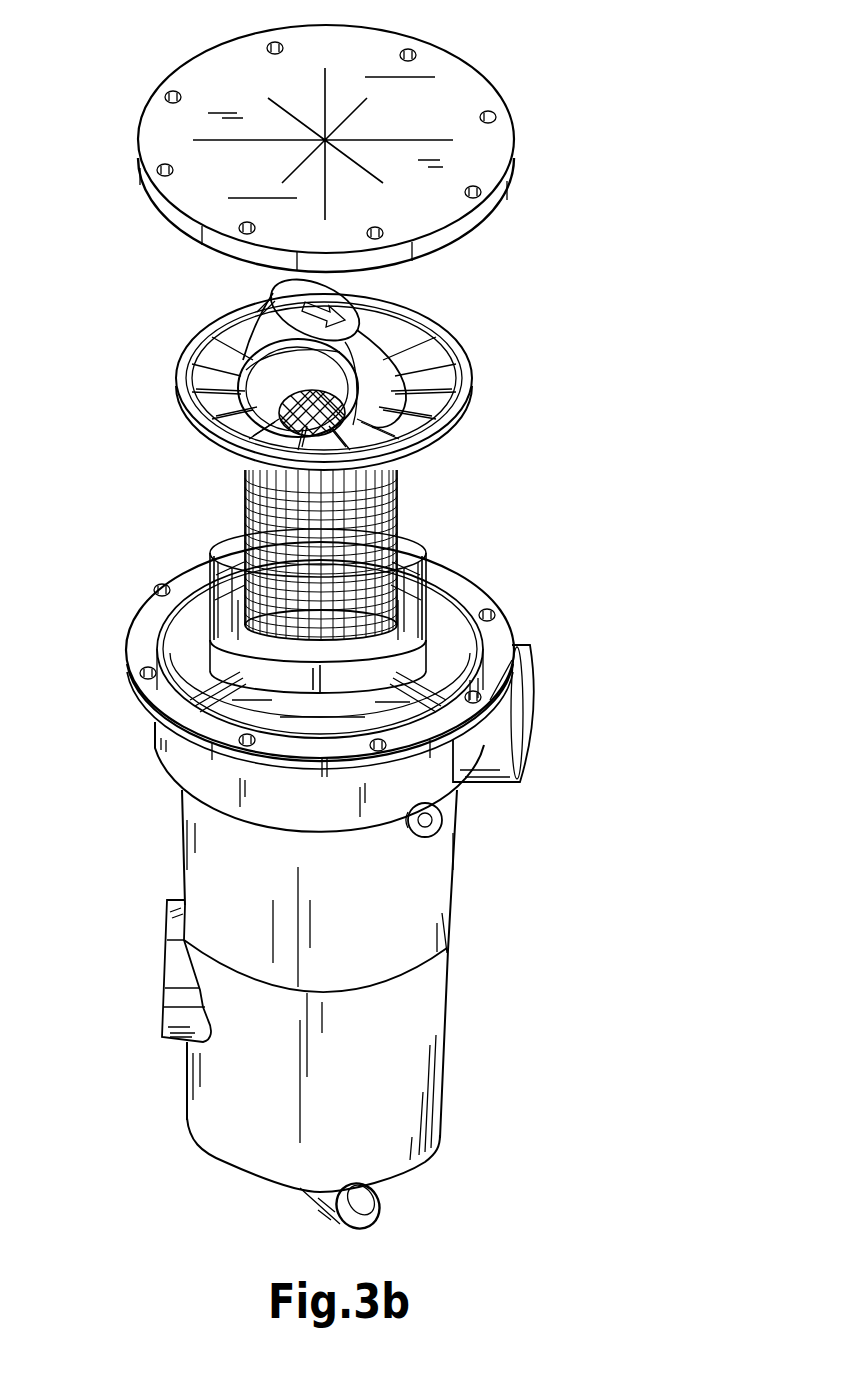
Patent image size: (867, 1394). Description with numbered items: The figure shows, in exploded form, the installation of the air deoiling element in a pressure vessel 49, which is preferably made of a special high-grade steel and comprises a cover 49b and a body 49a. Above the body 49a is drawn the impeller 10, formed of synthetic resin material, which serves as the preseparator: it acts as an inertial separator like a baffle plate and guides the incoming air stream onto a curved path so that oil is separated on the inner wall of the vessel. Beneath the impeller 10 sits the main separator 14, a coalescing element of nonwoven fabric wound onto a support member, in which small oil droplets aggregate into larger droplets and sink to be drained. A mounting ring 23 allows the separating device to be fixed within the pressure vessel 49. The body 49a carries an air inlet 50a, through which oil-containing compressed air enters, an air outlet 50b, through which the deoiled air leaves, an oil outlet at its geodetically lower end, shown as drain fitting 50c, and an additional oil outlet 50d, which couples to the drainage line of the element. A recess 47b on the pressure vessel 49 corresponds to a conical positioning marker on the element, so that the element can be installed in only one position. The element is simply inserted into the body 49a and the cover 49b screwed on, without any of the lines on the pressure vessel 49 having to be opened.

The cover 49b is at (480, 97).
The mounting ring 23 is at (427, 353).
The main separator 14 is at (398, 500).
The recess 47b is at (192, 624).
The impeller 10 is at (420, 595).
The pressure vessel 49 is at (133, 788).
The body 49a is at (433, 979).
The air outlet 50b is at (520, 720).
The additional oil outlet 50d is at (432, 820).
The air inlet 50a is at (175, 979).
The drain outlet 50c is at (380, 1206).